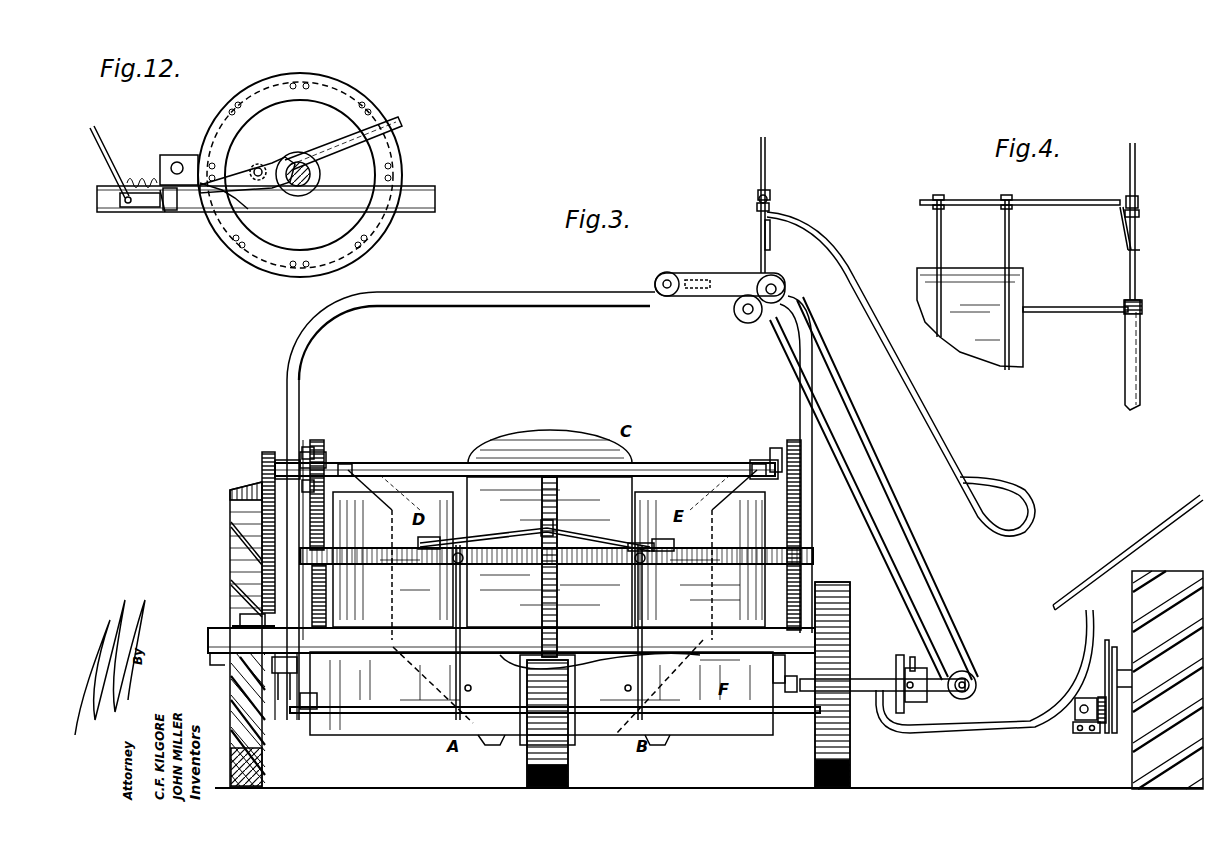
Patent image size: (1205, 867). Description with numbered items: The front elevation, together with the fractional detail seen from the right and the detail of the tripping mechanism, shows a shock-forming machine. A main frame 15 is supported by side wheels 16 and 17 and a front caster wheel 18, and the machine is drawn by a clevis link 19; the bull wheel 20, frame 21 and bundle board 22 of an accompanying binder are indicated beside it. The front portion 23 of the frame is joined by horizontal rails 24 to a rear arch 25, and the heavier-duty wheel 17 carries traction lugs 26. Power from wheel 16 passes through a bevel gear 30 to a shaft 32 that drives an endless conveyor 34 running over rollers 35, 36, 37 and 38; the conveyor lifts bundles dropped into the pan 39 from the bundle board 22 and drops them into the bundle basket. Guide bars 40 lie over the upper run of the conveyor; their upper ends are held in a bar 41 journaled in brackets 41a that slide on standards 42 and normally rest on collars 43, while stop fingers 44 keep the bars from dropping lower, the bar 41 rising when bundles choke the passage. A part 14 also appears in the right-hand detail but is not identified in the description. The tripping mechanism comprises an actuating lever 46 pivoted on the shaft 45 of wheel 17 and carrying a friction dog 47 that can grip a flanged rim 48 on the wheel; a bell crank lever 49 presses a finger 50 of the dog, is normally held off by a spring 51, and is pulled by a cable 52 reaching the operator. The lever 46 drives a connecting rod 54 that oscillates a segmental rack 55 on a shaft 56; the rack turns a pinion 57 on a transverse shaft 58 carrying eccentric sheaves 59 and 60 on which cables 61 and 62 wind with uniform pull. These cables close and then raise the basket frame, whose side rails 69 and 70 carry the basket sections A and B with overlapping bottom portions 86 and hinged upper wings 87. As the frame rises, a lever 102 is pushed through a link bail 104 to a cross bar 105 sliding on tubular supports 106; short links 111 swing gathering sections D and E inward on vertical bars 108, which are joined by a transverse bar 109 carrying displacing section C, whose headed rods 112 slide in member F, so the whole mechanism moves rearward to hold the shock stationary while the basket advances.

In FIG. 4, the plate 14 is at (970, 317).
In FIG. 12, the main frame 15 is at (418, 205).
In FIG. 3, the main frame 15 is at (388, 648).
In FIG. 3, the side wheel 16 is at (850, 760).
In FIG. 3, the side wheel 17 is at (268, 760).
In FIG. 3, the front caster wheel 18 is at (569, 772).
In FIG. 3, the clevis link 19 is at (558, 628).
In FIG. 3, the bull wheel 20 is at (1175, 575).
In FIG. 3, the frame 21 is at (1086, 700).
In FIG. 3, the bundle board 22 is at (1170, 518).
In FIG. 3, the portion 23 is at (310, 580).
In FIG. 3, the horizontal rails 24 is at (288, 460).
In FIG. 4, the rear arch 25 is at (1125, 366).
In FIG. 3, the rear arch 25 is at (452, 305).
In FIG. 3, the traction lugs 26 is at (240, 593).
In FIG. 3, the bevel gear 30 is at (898, 662).
In FIG. 3, the shaft 32 is at (916, 695).
In FIG. 4, the endless conveyor 34 is at (1023, 355).
In FIG. 3, the endless conveyor 34 is at (880, 473).
In FIG. 3, the roller 35 is at (970, 676).
In FIG. 3, the roller 36 is at (780, 282).
In FIG. 3, the roller 37 is at (663, 278).
In FIG. 3, the roller 38 is at (746, 322).
In FIG. 3, the pan 39 is at (1090, 620).
In FIG. 4, the guide bars 40 is at (1004, 235).
In FIG. 3, the guide bars 40 is at (903, 376).
In FIG. 4, the bar 41 is at (1062, 207).
In FIG. 3, the bar 41 is at (771, 196).
In FIG. 4, the brackets 41a is at (1140, 200).
In FIG. 3, the brackets 41a is at (758, 196).
In FIG. 4, the standards 42 is at (1137, 170).
In FIG. 3, the standards 42 is at (767, 150).
In FIG. 4, the collars 43 is at (1140, 213).
In FIG. 3, the collars 43 is at (757, 208).
In FIG. 4, the stop fingers 44 is at (1122, 242).
In FIG. 3, the stop fingers 44 is at (770, 240).
In FIG. 12, the shaft 45 is at (312, 170).
In FIG. 12, the actuating lever 46 is at (257, 157).
In FIG. 12, the friction dog 47 is at (250, 209).
In FIG. 12, the flanged rim 48 is at (335, 94).
In FIG. 12, the bell crank lever 49 is at (142, 208).
In FIG. 3, the bell crank lever 49 is at (282, 683).
In FIG. 12, the finger 50 is at (178, 212).
In FIG. 12, the spring 51 is at (134, 180).
In FIG. 12, the cord or cable 52 is at (117, 150).
In FIG. 12, the connecting rod 54 is at (340, 137).
In FIG. 3, the connecting rod 54 is at (230, 500).
In FIG. 3, the segmental rack 55 is at (232, 531).
In FIG. 3, the shaft 56 is at (240, 616).
In FIG. 3, the pinion 57 is at (262, 452).
In FIG. 3, the shaft 58 is at (392, 463).
In FIG. 3, the sheave 59 is at (318, 456).
In FIG. 3, the sheave 60 is at (775, 450).
In FIG. 3, the cable 61 is at (324, 522).
In FIG. 3, the cable 62 is at (801, 525).
In FIG. 3, the side rail or bar 69 is at (312, 695).
In FIG. 3, the side rail or bar 70 is at (783, 675).
In FIG. 3, the overlapping bottom portions 86 is at (487, 742).
In FIG. 3, the upper wings or closing portions 87 is at (352, 468).
In FIG. 3, the lever 102 is at (545, 522).
In FIG. 3, the link bail 104 is at (505, 534).
In FIG. 3, the cross bar 105 is at (620, 545).
In FIG. 3, the tubular supports 106 is at (455, 563).
In FIG. 3, the vertical bars 108 is at (456, 612).
In FIG. 3, the transverse bar 109 is at (608, 655).
In FIG. 3, the short links 111 is at (549, 533).
In FIG. 3, the headed rods 112 is at (470, 686).